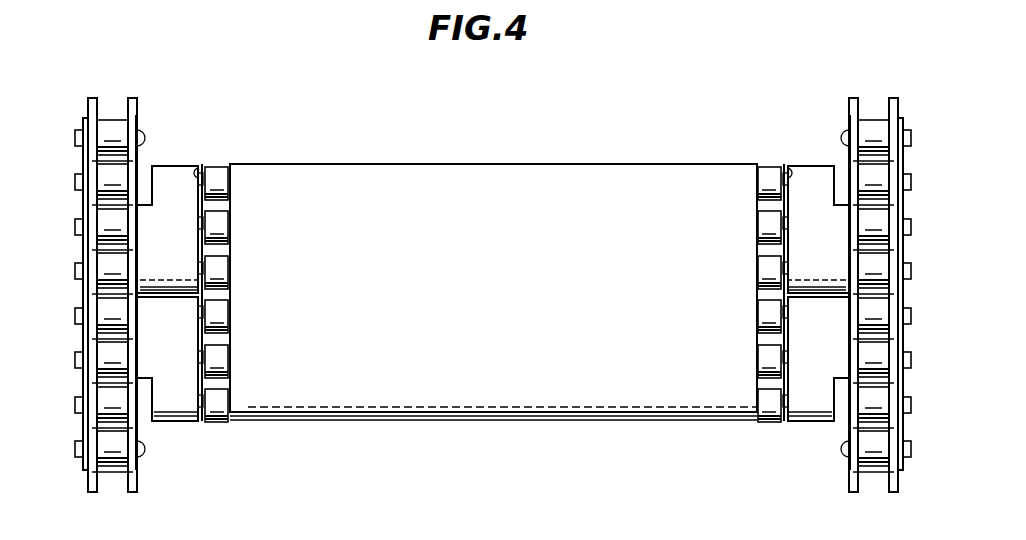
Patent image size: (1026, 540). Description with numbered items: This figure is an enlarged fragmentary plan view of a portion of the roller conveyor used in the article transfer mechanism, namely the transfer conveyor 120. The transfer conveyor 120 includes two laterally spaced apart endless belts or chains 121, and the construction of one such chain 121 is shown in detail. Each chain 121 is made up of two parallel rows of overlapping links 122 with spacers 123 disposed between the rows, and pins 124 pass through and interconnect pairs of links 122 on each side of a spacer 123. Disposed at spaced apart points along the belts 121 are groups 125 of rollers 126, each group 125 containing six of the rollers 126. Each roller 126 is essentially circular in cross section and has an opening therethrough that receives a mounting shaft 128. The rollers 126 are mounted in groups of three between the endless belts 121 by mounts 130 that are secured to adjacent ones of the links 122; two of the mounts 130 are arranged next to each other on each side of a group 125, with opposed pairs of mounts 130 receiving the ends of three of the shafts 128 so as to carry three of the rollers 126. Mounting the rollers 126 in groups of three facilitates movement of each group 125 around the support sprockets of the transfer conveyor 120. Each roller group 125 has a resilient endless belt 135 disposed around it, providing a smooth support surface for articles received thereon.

The transfer conveyor 120 is at (293, 105).
The endless belt or chain 121 is at (105, 92).
The link 122 is at (137, 120).
The spacer 123 is at (110, 145).
The pin 124 is at (77, 135).
The roller group 125 is at (536, 163).
The roller 126 is at (218, 169).
The mounting shaft 128 is at (196, 168).
The mount 130 is at (168, 177).
The resilient endless belt 135 is at (422, 273).